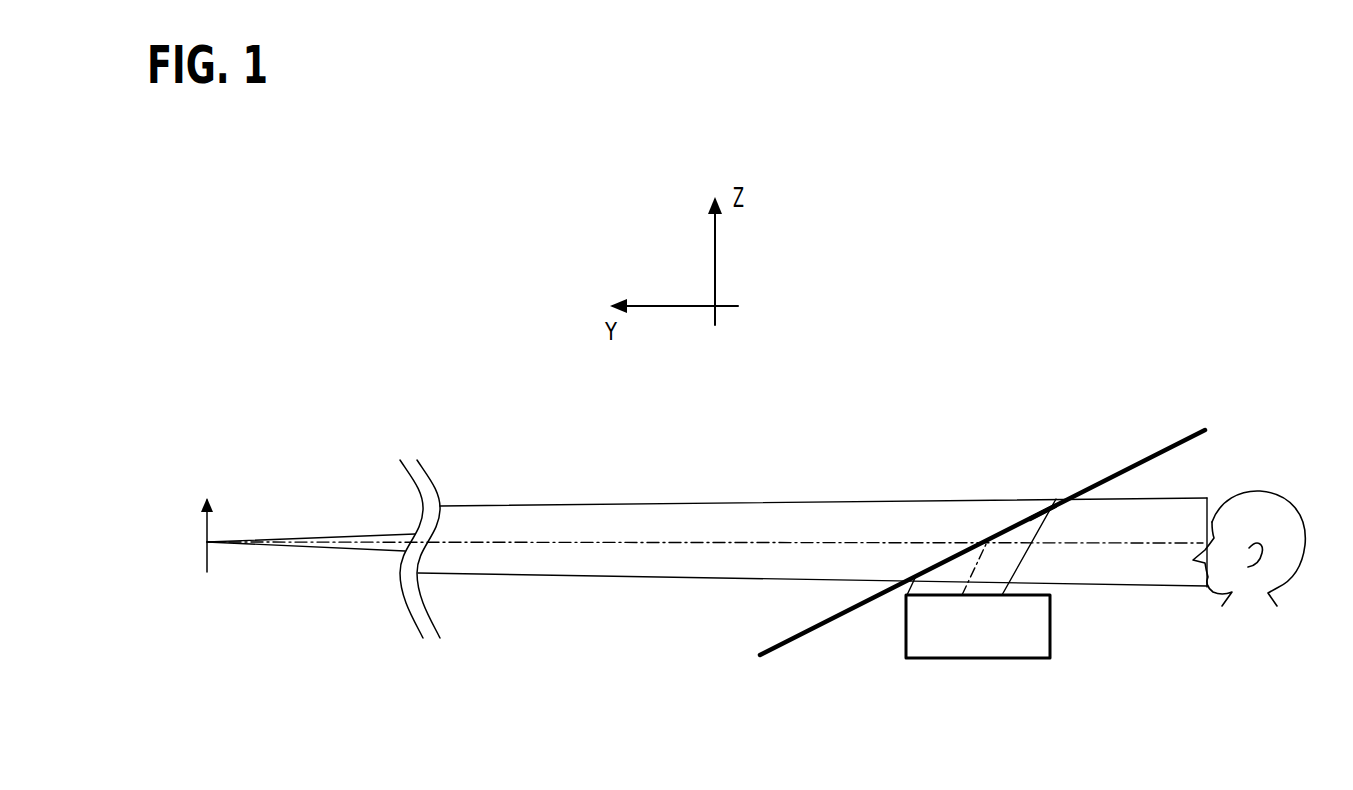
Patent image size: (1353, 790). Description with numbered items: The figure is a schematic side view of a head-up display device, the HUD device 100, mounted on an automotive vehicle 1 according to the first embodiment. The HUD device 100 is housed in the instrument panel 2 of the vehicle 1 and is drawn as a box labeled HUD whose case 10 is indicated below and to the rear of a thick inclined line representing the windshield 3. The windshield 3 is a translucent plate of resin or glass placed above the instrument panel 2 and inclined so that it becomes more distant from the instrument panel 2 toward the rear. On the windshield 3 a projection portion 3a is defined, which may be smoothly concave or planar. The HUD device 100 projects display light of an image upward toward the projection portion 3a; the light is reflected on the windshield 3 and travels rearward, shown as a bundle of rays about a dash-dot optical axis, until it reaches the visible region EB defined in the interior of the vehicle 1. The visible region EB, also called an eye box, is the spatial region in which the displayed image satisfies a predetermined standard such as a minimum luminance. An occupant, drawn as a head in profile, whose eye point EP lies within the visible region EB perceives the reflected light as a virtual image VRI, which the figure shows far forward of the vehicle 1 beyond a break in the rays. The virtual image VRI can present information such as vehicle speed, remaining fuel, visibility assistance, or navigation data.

The vehicle 1 is at (918, 362).
The instrument panel 2 is at (1077, 612).
The windshield 3 is at (1145, 458).
The projection portion 3a is at (1051, 520).
The case 10 is at (1052, 640).
The HUD device 100 is at (896, 648).
The virtual image VRI is at (196, 525).
The visible region EB is at (1209, 501).
The eye point EP is at (1218, 540).